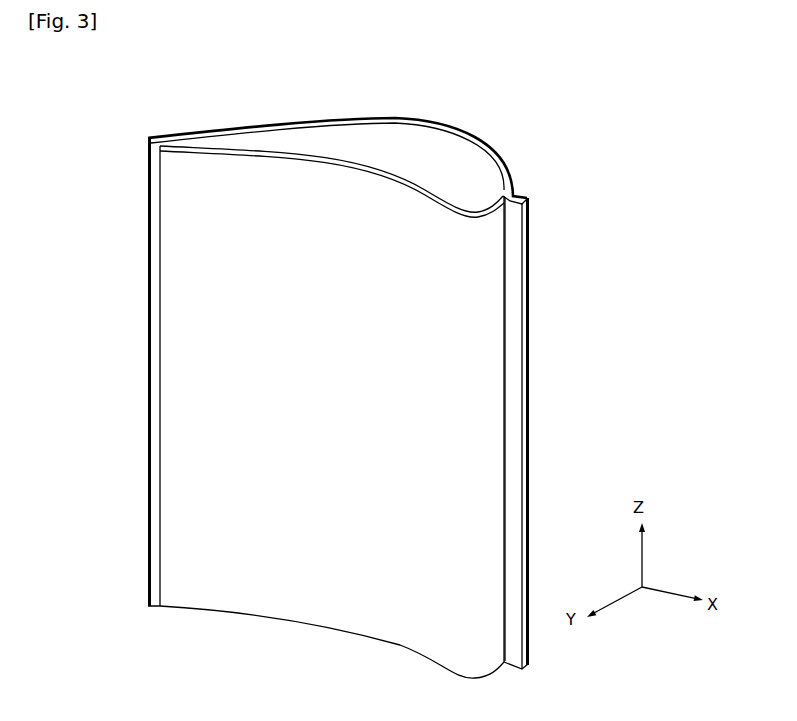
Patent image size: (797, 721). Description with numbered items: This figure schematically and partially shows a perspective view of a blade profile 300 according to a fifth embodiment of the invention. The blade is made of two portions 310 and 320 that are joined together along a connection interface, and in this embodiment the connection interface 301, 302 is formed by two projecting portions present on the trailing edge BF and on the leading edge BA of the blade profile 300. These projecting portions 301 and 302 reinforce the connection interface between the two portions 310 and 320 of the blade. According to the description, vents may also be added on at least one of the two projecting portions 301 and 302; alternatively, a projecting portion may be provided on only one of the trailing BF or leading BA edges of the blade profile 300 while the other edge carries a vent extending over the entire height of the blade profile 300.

The blade profile 300 is at (593, 136).
The first portion of the blade 310 is at (433, 122).
The second portion of the blade 320 is at (280, 175).
The projecting portion of the connection interface 301 is at (148, 582).
The projecting portion of the connection interface 302 is at (529, 320).
The trailing edge BF is at (108, 266).
The leading edge BA is at (586, 416).